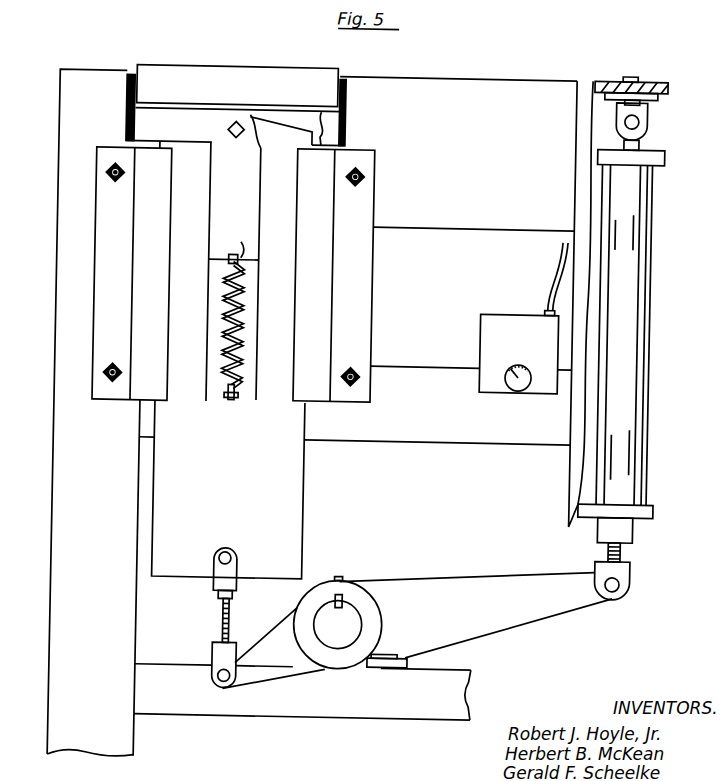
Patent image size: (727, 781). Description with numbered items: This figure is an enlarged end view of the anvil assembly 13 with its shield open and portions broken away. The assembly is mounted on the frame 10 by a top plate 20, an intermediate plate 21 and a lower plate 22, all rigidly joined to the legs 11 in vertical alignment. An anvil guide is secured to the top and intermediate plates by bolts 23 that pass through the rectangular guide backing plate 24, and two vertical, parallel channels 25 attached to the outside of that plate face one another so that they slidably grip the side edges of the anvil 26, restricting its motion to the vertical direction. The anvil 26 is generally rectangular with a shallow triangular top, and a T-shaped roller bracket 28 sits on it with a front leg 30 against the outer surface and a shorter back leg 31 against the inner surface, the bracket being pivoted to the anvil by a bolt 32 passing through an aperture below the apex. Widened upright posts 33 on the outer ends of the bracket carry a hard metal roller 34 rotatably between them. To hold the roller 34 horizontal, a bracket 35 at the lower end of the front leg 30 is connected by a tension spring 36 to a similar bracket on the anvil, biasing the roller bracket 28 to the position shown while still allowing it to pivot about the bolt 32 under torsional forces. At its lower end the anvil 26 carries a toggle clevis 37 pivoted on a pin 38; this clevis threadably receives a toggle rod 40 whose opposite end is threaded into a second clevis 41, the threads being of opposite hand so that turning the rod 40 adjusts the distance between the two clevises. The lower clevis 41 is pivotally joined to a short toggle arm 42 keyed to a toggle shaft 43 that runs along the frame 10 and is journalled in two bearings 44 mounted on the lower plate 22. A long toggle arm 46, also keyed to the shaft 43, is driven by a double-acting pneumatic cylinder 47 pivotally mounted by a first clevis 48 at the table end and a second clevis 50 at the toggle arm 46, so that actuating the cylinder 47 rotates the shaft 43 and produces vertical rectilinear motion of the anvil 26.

The frame 10 is at (230, 43).
The legs 11 is at (53, 306).
The anvil assembly 13 is at (129, 459).
The top plate 20 is at (467, 127).
The intermediate plate 21 is at (459, 424).
The lower plate 22 is at (424, 700).
The bolts 23 is at (99, 176).
The guide backing plate 24 is at (92, 257).
The channels 25 is at (160, 285).
The anvil 26 is at (268, 473).
The roller bracket 28 is at (174, 140).
The front leg 30 is at (240, 193).
The back leg 31 is at (302, 132).
The bolt 32 is at (229, 143).
The upright posts 33 is at (119, 102).
The roller 34 is at (329, 72).
The bracket 35 is at (231, 249).
The tension spring 36 is at (242, 323).
The toggle clevis 37 is at (241, 564).
The pin 38 is at (235, 555).
The toggle rod 40 is at (234, 624).
The second clevis 41 is at (219, 663).
The short toggle arm 42 is at (289, 669).
The toggle shaft 43 is at (351, 638).
The bearings 44 is at (390, 654).
The long toggle arm 46 is at (463, 622).
The double-acting pneumatic cylinder 47 is at (650, 401).
The first clevis 48 is at (644, 121).
The second clevis 50 is at (637, 579).